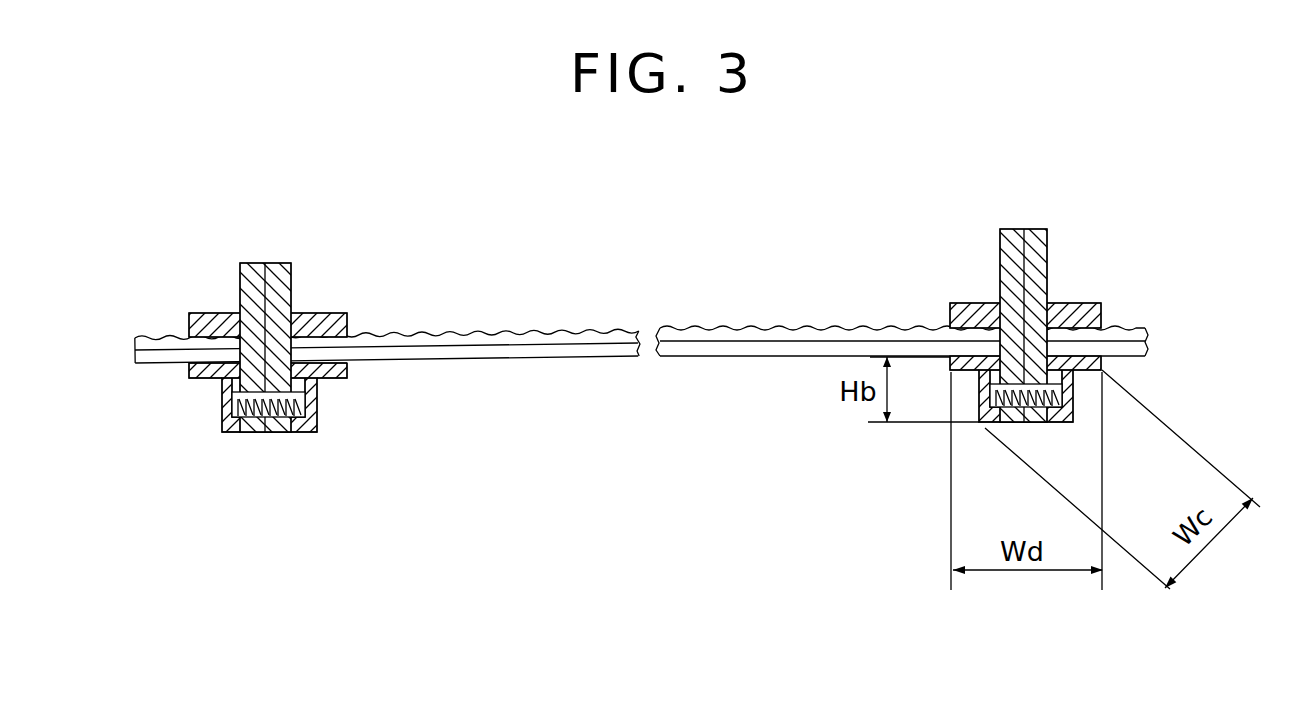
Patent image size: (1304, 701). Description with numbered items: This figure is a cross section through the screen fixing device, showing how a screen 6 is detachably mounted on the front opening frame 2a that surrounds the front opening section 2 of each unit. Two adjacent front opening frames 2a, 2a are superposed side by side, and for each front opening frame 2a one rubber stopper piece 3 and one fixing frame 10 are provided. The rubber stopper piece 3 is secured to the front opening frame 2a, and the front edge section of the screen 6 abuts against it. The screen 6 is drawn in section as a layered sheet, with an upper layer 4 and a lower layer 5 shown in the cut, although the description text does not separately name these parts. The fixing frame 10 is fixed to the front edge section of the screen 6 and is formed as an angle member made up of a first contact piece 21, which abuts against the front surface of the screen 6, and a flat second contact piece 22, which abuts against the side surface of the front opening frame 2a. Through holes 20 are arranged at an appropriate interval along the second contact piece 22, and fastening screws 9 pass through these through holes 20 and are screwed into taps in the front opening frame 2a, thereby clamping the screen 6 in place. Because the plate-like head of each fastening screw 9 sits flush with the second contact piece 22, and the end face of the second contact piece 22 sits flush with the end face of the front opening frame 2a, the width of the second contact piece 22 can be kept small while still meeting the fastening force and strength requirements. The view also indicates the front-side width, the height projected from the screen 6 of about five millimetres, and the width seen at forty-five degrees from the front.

The front opening section 2 is at (613, 308).
The front opening frame 2a is at (255, 263).
The rubber stopper piece 3 is at (330, 313).
The upper layer of plate 4 is at (760, 329).
The lower layer of plate 5 is at (798, 350).
The screen 6 is at (711, 362).
The fastening screw 9 is at (227, 403).
The fixing frame 10 is at (188, 385).
The through hole 20 is at (260, 435).
The first contact piece 21 is at (340, 358).
The second contact piece 22 is at (285, 435).